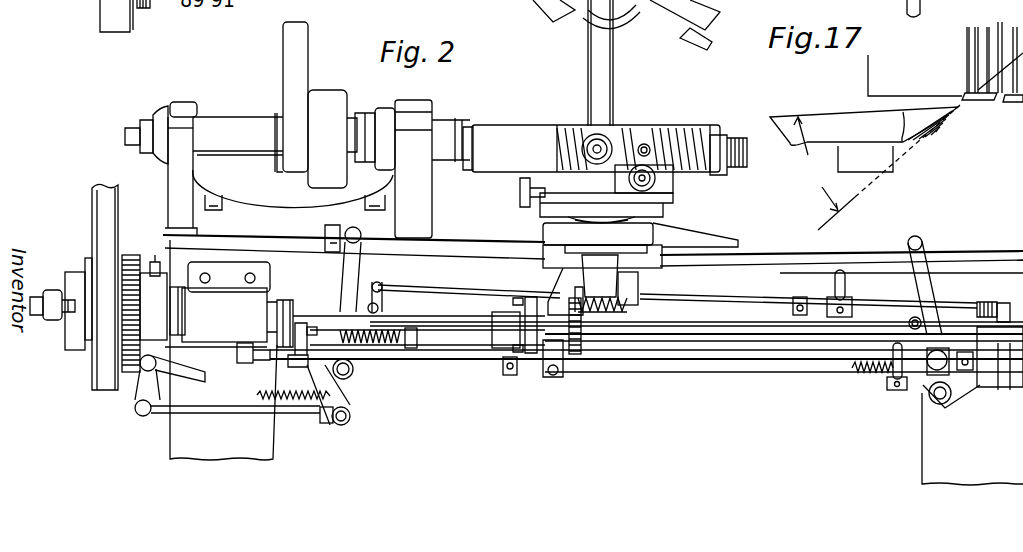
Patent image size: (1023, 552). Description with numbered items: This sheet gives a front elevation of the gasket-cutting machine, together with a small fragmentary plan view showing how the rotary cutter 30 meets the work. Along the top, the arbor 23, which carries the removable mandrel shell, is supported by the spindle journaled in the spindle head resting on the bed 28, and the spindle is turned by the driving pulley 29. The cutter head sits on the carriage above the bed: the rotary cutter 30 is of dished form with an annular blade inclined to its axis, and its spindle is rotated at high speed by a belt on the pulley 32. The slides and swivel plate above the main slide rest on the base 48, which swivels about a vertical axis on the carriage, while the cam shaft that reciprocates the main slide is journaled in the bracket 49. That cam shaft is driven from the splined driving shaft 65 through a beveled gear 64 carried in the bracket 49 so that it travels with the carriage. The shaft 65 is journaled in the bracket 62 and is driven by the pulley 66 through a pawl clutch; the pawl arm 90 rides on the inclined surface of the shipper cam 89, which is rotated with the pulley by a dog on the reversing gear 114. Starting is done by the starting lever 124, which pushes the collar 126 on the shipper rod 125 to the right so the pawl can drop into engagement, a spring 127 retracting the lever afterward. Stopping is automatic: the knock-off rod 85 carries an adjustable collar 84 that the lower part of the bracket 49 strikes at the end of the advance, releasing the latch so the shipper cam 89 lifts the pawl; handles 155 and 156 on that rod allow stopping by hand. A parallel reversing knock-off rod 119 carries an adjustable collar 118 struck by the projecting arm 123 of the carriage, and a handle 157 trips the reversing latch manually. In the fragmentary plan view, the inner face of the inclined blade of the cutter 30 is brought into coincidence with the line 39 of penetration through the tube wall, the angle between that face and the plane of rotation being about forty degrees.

In FIG. 2, the arbor 23 is at (466, 126).
In FIG. 2, the bed 28 is at (326, 268).
In FIG. 2, the driving pulley 29 is at (276, 110).
In FIG. 17, the rotary cutter 30 is at (823, 113).
In FIG. 2, the pulley 32 is at (620, 130).
In FIG. 17, the line of penetration 39 is at (877, 167).
In FIG. 2, the swivel base 48 is at (657, 213).
In FIG. 2, the bracket 49 is at (610, 280).
In FIG. 2, the bracket 62 is at (221, 350).
In FIG. 2, the beveled gear 64 is at (578, 353).
In FIG. 2, the driving shaft 65 is at (702, 335).
In FIG. 2, the pulley 66 is at (93, 243).
In FIG. 2, the adjustable collar 84 is at (508, 372).
In FIG. 2, the knock-off rod 85 is at (468, 363).
In FIG. 2, the shipper cam 89 is at (168, 322).
In FIG. 2, the arm 90 is at (155, 146).
In FIG. 2, the reversing gear 114 is at (138, 262).
In FIG. 2, the adjustable collar 118 is at (790, 300).
In FIG. 2, the knock-off rod 119 is at (476, 286).
In FIG. 2, the projecting arm 123 is at (628, 283).
In FIG. 2, the starting lever 124 is at (922, 263).
In FIG. 17, the starting lever 124 is at (879, 11).
In FIG. 2, the shipper rod 125 is at (885, 393).
In FIG. 2, the collar 126 is at (967, 363).
In FIG. 2, the spring 127 is at (870, 377).
In FIG. 2, the handle 155 is at (303, 360).
In FIG. 2, the handle 156 is at (895, 383).
In FIG. 2, the handle 157 is at (845, 292).